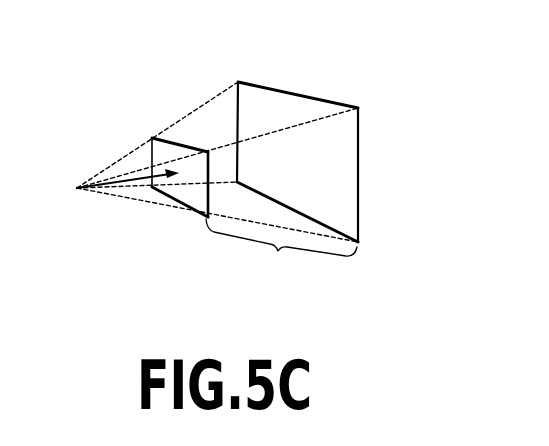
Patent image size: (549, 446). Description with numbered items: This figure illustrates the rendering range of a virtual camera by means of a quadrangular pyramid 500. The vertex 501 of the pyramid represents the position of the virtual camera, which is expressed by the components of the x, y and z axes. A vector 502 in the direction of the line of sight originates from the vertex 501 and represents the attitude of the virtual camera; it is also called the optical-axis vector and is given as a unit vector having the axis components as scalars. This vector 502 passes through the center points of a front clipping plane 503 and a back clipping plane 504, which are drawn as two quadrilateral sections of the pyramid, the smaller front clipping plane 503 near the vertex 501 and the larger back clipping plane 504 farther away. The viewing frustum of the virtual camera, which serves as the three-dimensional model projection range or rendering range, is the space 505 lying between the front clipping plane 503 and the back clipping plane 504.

The quadrangular pyramid 500 is at (210, 90).
The vertex 501 is at (77, 192).
The vector 502 is at (128, 183).
The front clipping plane 503 is at (168, 142).
The back clipping plane 504 is at (288, 93).
The space 505 is at (281, 252).